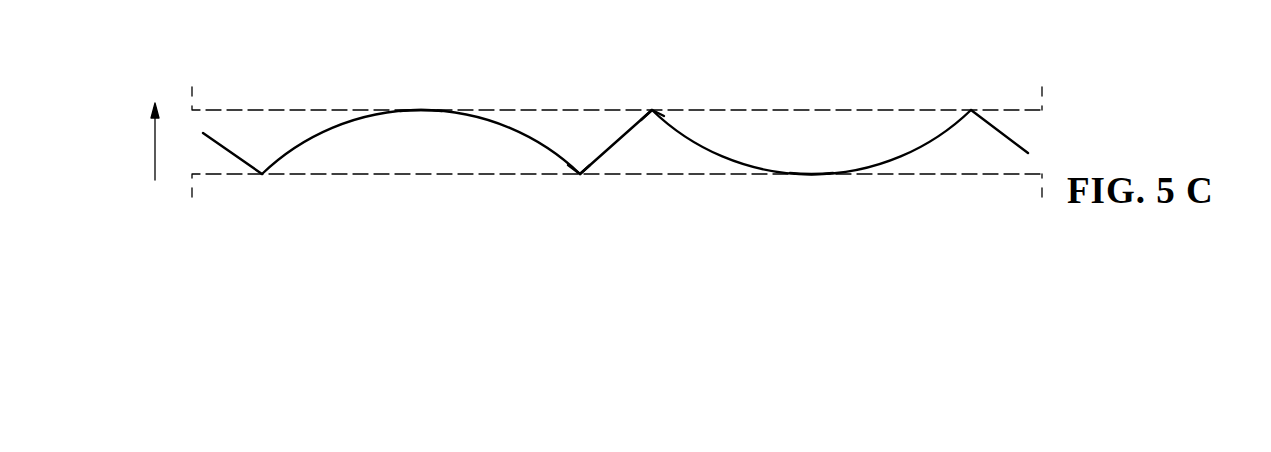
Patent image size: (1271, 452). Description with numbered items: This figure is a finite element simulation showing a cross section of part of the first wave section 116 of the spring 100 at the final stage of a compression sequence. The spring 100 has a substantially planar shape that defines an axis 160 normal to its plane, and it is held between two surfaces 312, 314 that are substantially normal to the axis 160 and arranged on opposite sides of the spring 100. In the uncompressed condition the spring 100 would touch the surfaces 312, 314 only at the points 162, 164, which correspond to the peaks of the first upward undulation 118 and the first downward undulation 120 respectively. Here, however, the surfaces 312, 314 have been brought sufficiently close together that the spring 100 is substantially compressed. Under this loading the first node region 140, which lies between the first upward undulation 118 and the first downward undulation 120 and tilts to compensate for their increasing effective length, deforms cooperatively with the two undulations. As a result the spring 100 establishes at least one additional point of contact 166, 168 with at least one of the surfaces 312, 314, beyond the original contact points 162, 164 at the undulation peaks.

The spring 100 is at (1020, 70).
The first wave section 116 is at (1015, 138).
The first upward undulation 118 is at (323, 133).
The first downward undulation 120 is at (887, 160).
The first node region 140 is at (618, 140).
The axis 160 is at (155, 153).
The point of contact 162 is at (425, 110).
The point of contact 164 is at (800, 175).
The additional point of contact 166 is at (652, 110).
The additional point of contact 168 is at (582, 175).
The surface 312 is at (898, 110).
The surface 314 is at (497, 175).